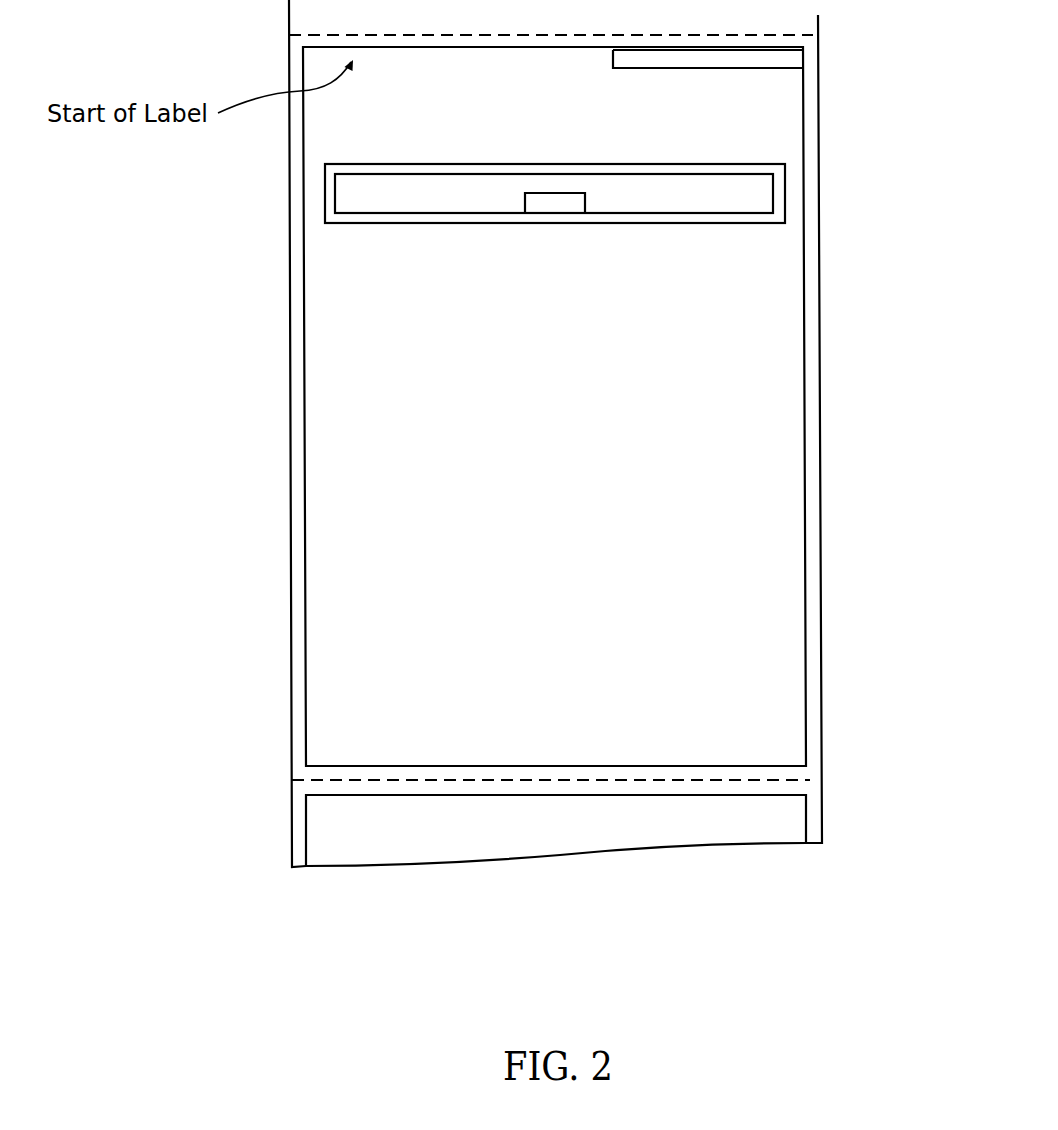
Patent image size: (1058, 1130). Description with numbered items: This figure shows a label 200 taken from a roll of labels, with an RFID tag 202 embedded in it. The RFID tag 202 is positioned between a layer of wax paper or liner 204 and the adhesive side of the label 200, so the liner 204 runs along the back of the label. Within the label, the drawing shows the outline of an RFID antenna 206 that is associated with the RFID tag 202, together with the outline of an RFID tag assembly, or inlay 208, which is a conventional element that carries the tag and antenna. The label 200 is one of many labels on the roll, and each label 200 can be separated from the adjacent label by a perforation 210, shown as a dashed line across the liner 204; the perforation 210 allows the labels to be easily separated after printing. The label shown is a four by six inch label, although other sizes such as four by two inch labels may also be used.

The label 200 is at (554, 406).
The RFID tag 202 is at (540, 207).
The liner 204 is at (823, 389).
The RFID antenna 206 is at (640, 214).
The RFID tag assembly (inlay) 208 is at (735, 228).
The perforation 210 is at (812, 786).